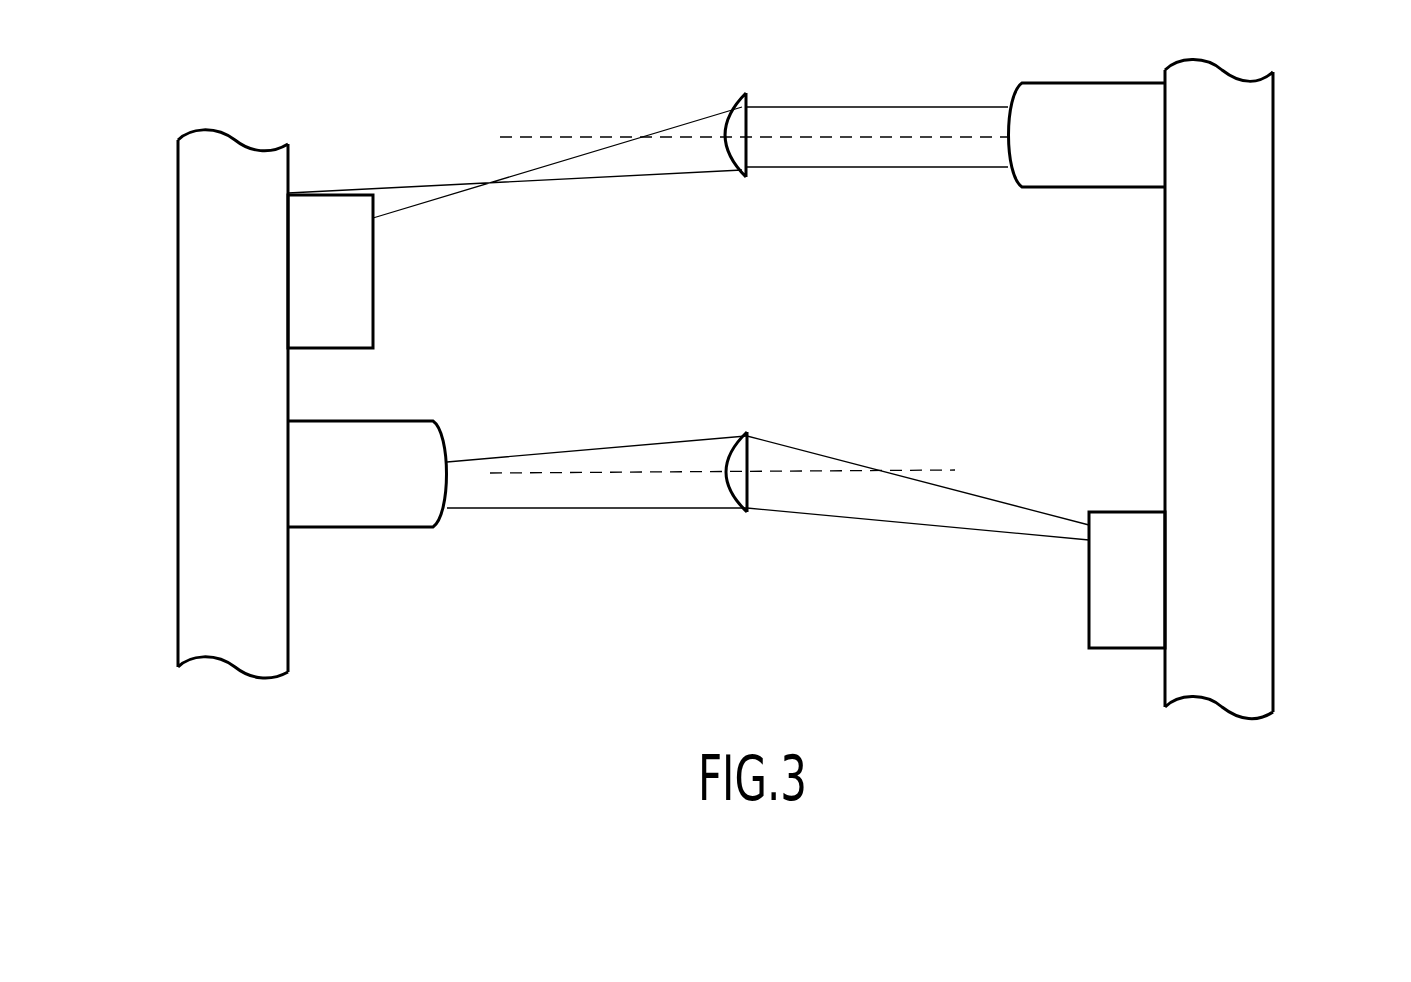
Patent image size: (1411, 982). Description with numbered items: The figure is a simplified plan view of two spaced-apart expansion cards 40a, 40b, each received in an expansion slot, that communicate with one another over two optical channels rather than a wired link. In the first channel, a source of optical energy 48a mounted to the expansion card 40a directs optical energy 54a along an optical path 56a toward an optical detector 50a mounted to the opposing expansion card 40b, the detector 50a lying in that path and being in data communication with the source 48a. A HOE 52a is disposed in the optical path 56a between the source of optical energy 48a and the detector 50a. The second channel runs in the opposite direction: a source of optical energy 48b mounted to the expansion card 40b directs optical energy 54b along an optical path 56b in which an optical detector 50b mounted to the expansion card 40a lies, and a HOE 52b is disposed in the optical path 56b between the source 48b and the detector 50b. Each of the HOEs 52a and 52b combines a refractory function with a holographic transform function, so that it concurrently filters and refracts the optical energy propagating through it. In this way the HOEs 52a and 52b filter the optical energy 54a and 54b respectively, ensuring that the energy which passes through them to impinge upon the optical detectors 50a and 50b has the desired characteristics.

The expansion card 40a is at (195, 585).
The expansion card 40b is at (1263, 525).
The source of optical energy 48a is at (410, 421).
The source of optical energy 48b is at (1063, 188).
The optical detector 50a is at (1100, 648).
The optical detector 50b is at (373, 322).
The HOE 52a is at (728, 492).
The HOE 52b is at (737, 100).
The optical energy 54a is at (662, 447).
The optical energy 54b is at (866, 107).
The optical path 56a is at (490, 480).
The optical path 56b is at (852, 140).